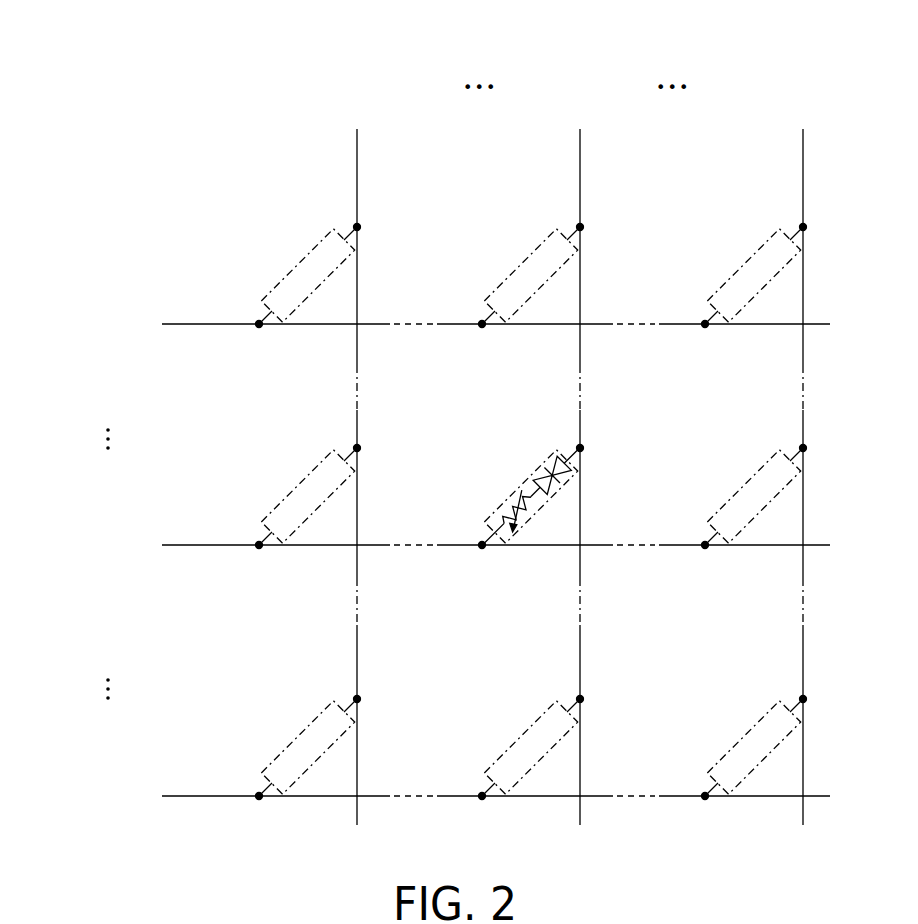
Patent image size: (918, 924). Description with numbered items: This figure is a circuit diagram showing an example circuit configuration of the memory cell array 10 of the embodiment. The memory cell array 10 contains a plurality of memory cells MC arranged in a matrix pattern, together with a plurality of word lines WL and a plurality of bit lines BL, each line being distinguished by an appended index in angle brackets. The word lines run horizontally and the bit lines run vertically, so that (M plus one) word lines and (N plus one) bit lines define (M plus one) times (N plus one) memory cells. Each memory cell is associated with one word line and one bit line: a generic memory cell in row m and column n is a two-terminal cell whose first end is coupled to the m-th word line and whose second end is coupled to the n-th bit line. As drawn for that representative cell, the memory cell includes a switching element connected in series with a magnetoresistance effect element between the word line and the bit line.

The memory cell array 10 is at (100, 78).